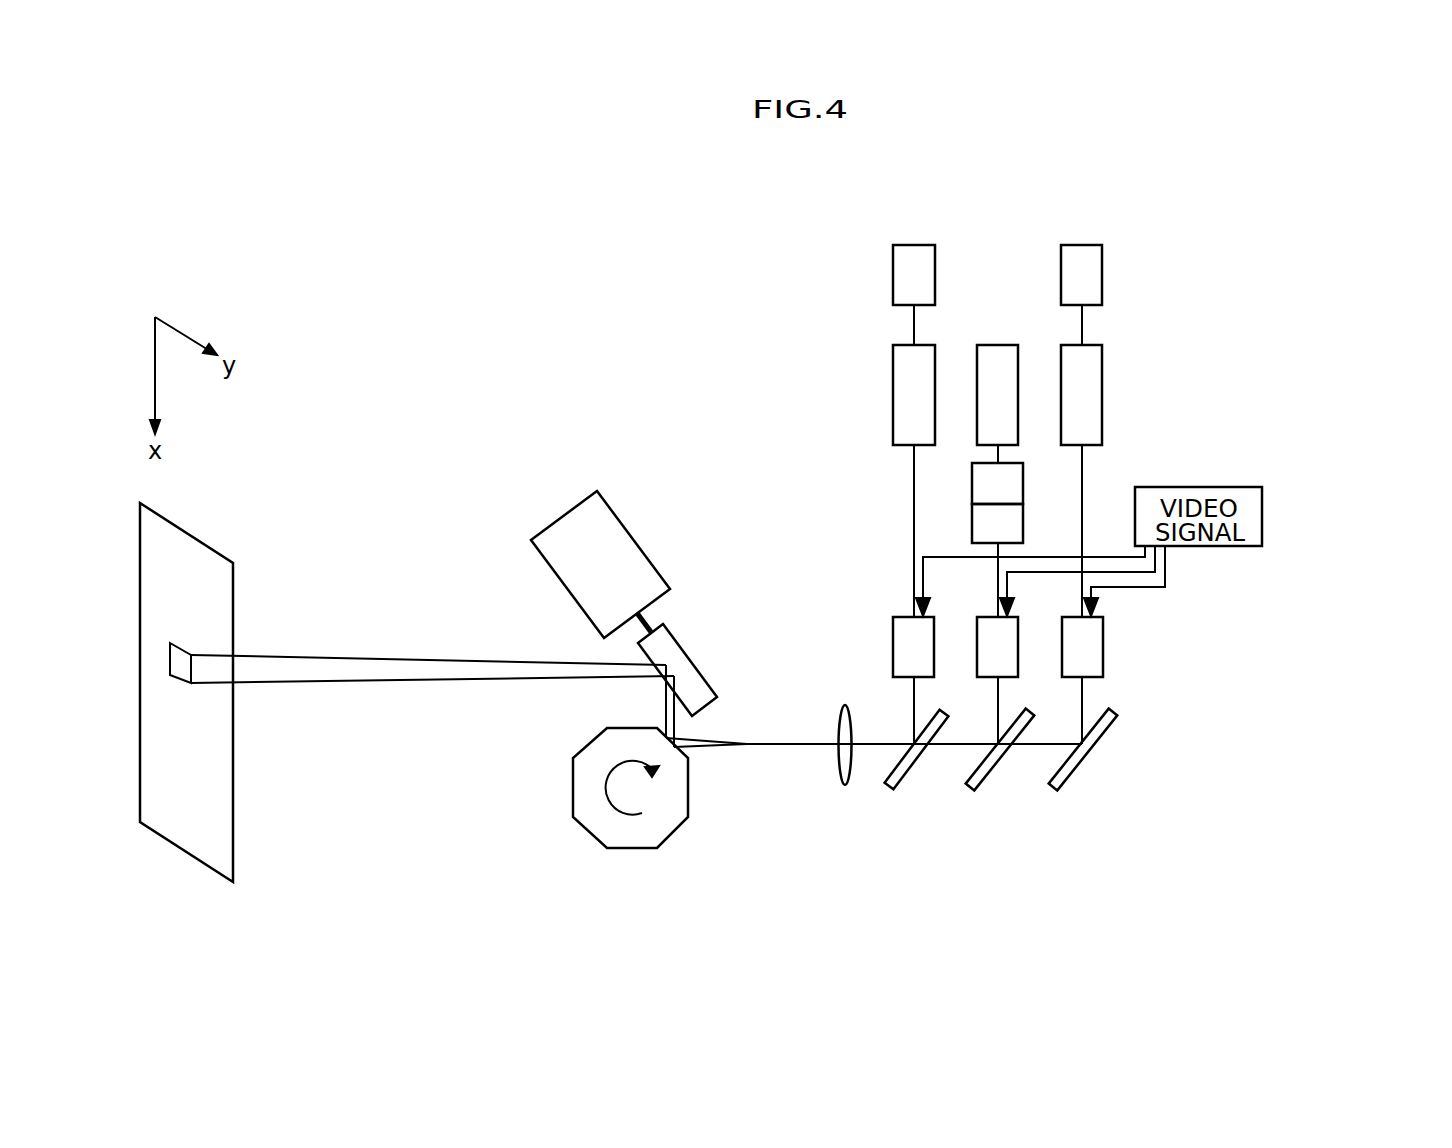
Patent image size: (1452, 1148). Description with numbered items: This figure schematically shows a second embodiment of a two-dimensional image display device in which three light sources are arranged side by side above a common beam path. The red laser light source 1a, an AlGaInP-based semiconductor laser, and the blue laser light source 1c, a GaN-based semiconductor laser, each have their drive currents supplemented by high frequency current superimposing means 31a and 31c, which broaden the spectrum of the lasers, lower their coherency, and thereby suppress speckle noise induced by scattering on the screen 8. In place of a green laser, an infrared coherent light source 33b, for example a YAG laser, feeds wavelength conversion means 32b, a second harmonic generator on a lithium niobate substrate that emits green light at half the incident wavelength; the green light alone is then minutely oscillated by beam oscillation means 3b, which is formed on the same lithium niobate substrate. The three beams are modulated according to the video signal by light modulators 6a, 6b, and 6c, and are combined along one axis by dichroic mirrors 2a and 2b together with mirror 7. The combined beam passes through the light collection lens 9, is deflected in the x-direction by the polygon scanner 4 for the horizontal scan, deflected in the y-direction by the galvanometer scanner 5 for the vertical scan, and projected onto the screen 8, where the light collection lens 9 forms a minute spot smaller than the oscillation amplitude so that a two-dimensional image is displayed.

The screen 8 is at (193, 556).
The galvanometer scanner 5 is at (565, 525).
The polygon scanner 4 is at (593, 823).
The light collection lens 9 is at (838, 763).
The high frequency current superimposing means 31c is at (900, 268).
The blue laser light source 1c is at (900, 383).
The infrared coherent light source 33b is at (995, 352).
The high frequency current superimposing means 31a is at (1097, 267).
The red laser light source 1a is at (1097, 383).
The wavelength conversion means 32b is at (980, 478).
The beam oscillation means 3b is at (980, 516).
The light modulator 6a is at (1093, 629).
The light modulator 6b is at (1010, 651).
The light modulator 6c is at (927, 658).
The mirror 7 is at (1093, 752).
The dichroic mirror 2a is at (997, 763).
The dichroic mirror 2b is at (915, 762).